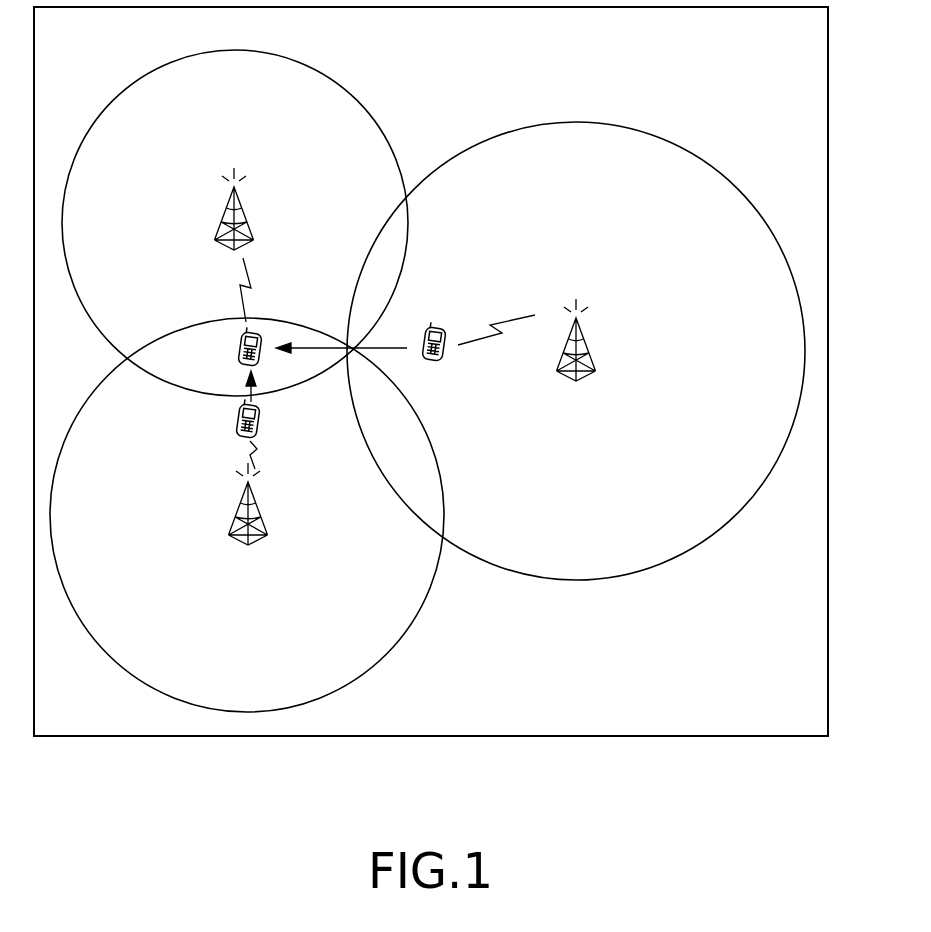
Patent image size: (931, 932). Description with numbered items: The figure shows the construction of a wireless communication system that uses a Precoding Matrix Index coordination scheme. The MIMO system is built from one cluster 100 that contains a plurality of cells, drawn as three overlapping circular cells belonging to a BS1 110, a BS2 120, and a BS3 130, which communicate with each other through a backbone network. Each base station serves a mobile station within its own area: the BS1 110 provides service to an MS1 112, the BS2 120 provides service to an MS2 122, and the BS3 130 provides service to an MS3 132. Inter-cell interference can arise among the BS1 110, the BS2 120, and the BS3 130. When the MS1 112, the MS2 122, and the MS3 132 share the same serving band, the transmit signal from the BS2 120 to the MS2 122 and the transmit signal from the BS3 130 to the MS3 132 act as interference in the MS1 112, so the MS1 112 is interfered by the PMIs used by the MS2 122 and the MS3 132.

The cluster 100 is at (431, 387).
The BS1 110 is at (235, 223).
The BS2 120 is at (576, 351).
The BS3 130 is at (247, 515).
The MS1 112 is at (223, 353).
The MS2 122 is at (369, 309).
The MS3 132 is at (277, 409).